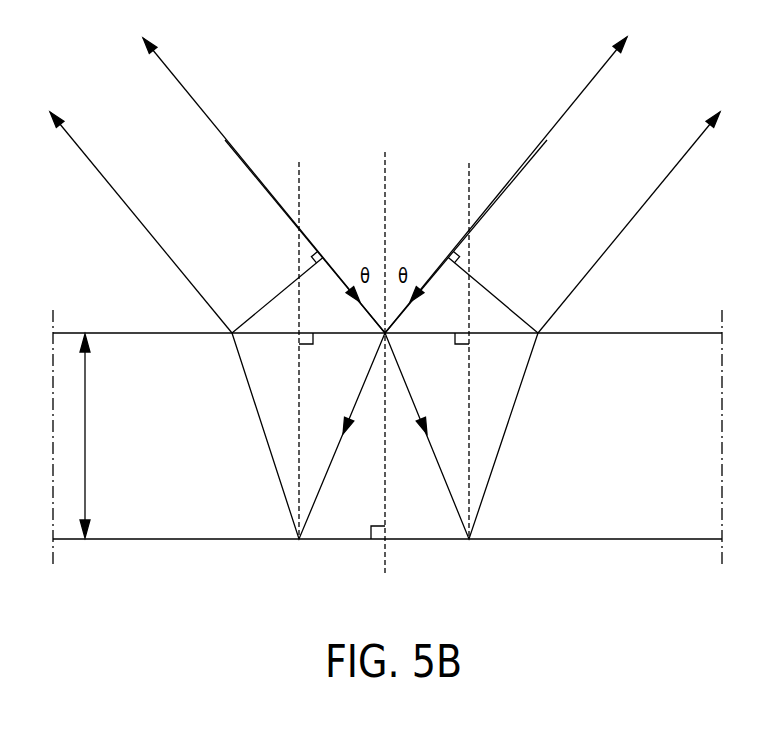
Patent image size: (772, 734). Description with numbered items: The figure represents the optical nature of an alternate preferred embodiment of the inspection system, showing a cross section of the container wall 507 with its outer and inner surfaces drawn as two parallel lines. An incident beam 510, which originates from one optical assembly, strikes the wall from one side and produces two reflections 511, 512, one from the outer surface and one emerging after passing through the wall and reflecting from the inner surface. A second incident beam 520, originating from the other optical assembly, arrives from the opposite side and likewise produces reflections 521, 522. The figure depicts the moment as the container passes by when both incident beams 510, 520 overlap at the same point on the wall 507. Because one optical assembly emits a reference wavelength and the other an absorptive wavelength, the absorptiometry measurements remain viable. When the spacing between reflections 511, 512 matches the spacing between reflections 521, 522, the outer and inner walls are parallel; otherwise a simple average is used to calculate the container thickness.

The container wall 507 is at (625, 507).
The incident beam 510 is at (463, 240).
The reflection 511 is at (198, 100).
The reflection 512 is at (110, 192).
The incident beam 520 is at (306, 237).
The reflection 521 is at (567, 108).
The reflection 522 is at (630, 225).